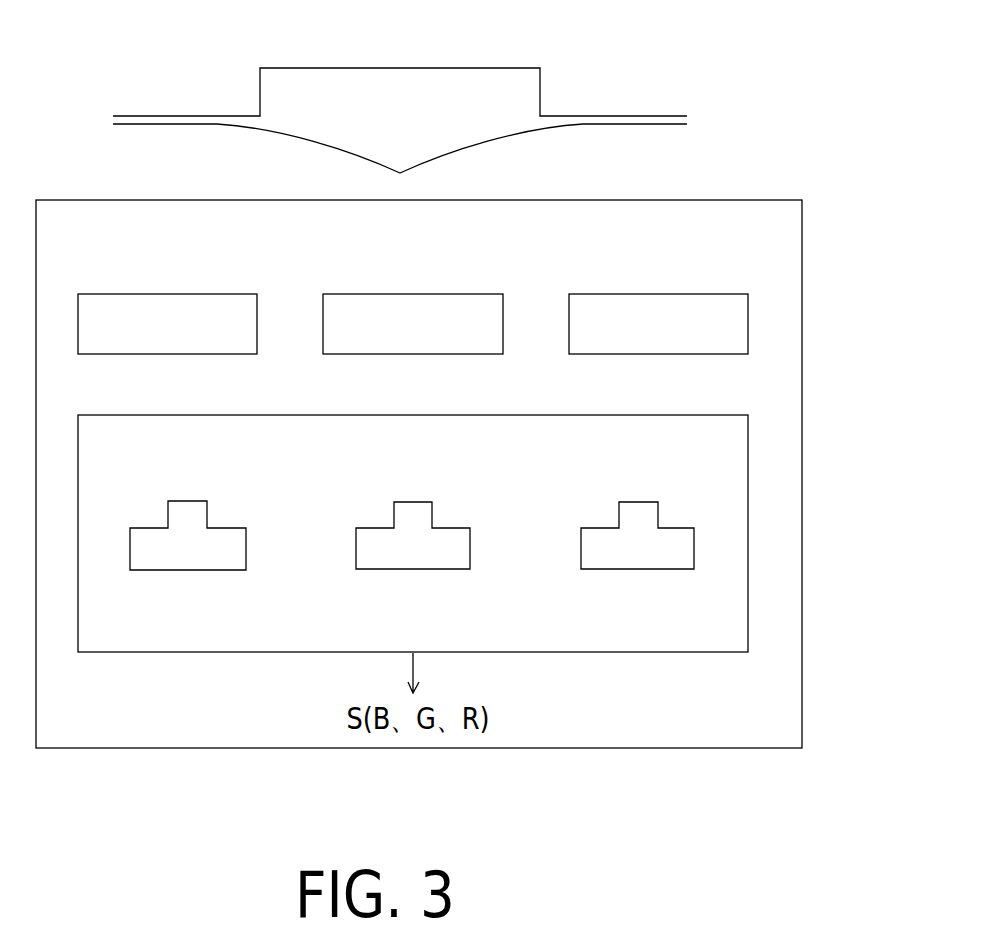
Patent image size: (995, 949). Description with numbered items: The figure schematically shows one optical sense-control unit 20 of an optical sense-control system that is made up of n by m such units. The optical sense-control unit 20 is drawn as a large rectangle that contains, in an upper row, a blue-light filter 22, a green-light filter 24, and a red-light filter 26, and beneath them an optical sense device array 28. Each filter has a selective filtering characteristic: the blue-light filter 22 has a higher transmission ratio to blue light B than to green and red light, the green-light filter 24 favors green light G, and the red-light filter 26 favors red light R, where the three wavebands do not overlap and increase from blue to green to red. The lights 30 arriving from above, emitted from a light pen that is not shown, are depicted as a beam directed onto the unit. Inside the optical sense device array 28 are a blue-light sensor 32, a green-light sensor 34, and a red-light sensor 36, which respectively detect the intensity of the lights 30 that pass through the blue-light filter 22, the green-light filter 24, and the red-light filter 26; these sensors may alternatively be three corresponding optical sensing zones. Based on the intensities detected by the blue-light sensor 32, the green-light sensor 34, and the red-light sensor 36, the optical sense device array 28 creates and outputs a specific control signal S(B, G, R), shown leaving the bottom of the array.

The optical sense-control unit 20 is at (802, 260).
The blue-light filter 22 is at (167, 324).
The green-light filter 24 is at (413, 324).
The red-light filter 26 is at (658, 324).
The optical sense device array 28 is at (748, 470).
The lights 30 is at (400, 68).
The blue-light sensor 32 is at (188, 535).
The green-light sensor 34 is at (413, 535).
The red-light sensor 36 is at (637, 535).